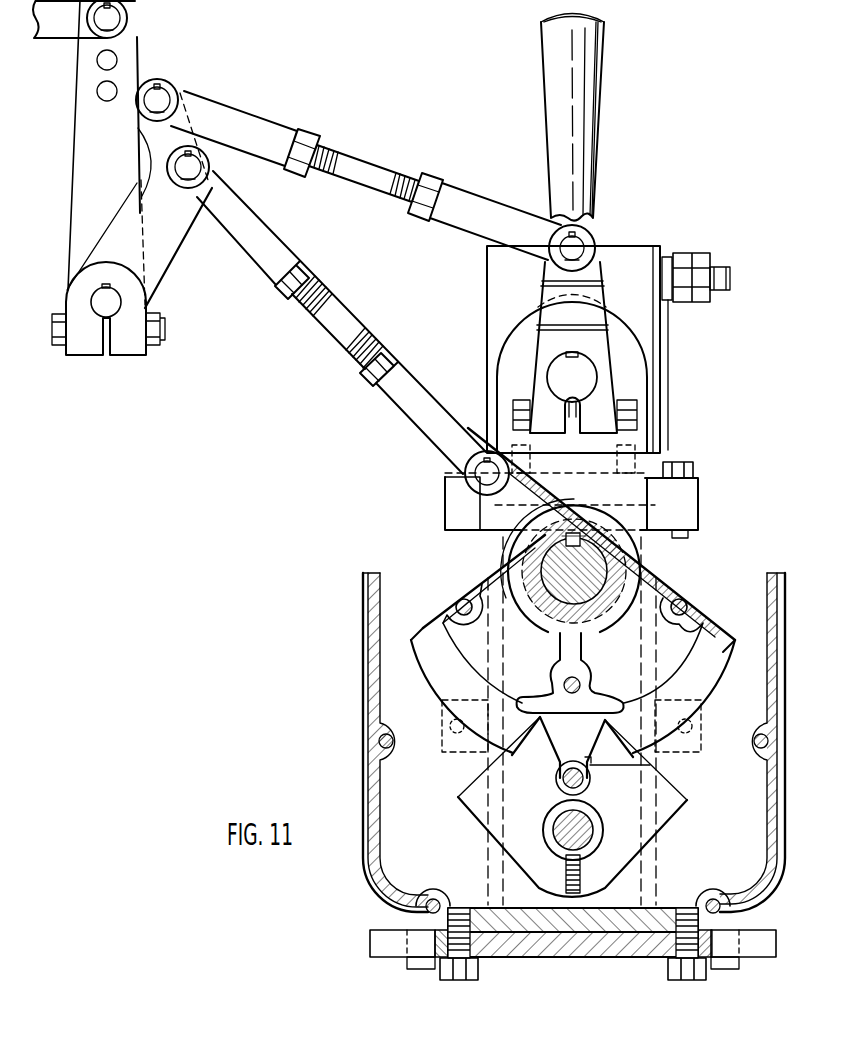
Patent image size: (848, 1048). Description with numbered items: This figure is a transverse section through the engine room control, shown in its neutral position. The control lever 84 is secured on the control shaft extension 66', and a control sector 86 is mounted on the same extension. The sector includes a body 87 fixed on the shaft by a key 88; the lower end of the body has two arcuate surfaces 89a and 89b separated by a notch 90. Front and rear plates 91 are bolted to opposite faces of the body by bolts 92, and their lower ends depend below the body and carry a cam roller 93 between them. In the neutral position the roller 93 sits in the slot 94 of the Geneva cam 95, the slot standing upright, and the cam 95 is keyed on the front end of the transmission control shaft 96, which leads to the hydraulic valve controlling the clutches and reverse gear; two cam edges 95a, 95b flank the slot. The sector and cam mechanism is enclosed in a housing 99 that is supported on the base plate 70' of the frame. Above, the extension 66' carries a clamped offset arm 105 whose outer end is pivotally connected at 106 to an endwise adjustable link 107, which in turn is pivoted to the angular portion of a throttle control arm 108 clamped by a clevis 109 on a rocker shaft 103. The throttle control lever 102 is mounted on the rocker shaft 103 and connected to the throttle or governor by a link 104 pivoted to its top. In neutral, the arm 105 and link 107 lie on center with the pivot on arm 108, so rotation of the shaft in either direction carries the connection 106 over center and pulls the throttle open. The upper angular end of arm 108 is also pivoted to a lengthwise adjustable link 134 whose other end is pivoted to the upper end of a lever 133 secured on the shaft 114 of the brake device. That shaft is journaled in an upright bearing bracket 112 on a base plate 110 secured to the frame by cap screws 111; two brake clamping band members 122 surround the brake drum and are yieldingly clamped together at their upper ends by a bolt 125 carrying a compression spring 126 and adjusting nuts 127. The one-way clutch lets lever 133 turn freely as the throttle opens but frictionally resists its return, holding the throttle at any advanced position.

The control shaft extension 66' is at (513, 550).
The base plate 70' is at (573, 940).
The control lever 84 is at (587, 97).
The control sector 86 is at (450, 577).
The body 87 is at (667, 584).
The key 88 is at (567, 533).
The arcuate surface 89a is at (455, 683).
The arcuate surface 89b is at (697, 675).
The notch 90 is at (552, 713).
The front and rear plates 91 is at (420, 636).
The bolts 92 is at (456, 601).
The cam roller 93 is at (567, 767).
The cam slot 94 is at (650, 765).
The Geneva cam 95 is at (480, 820).
The cam plate edge 95a is at (483, 787).
The cam plate edge 95b is at (675, 793).
The transmission control shaft 96 is at (557, 870).
The housing 99 is at (373, 686).
The throttle control lever 102 is at (85, 140).
The rocker shaft 103 is at (90, 302).
The link 104 is at (72, 30).
The offset arm 105 is at (447, 511).
The pivotal connection 106 is at (470, 484).
The endwise adjustable link 107 is at (415, 422).
The throttle control arm 108 is at (167, 245).
The clevis 109 is at (125, 348).
The base plate 110 is at (685, 495).
The cap screws 111 is at (457, 458).
The bearing bracket 112 is at (637, 363).
The shaft 114 is at (558, 363).
The brake clamping band members 122 is at (497, 268).
The bolt 125 is at (730, 286).
The compression spring 126 is at (666, 300).
The adjusting nuts 127 is at (698, 253).
The lever 133 is at (596, 300).
The lengthwise adjustable link 134 is at (450, 193).